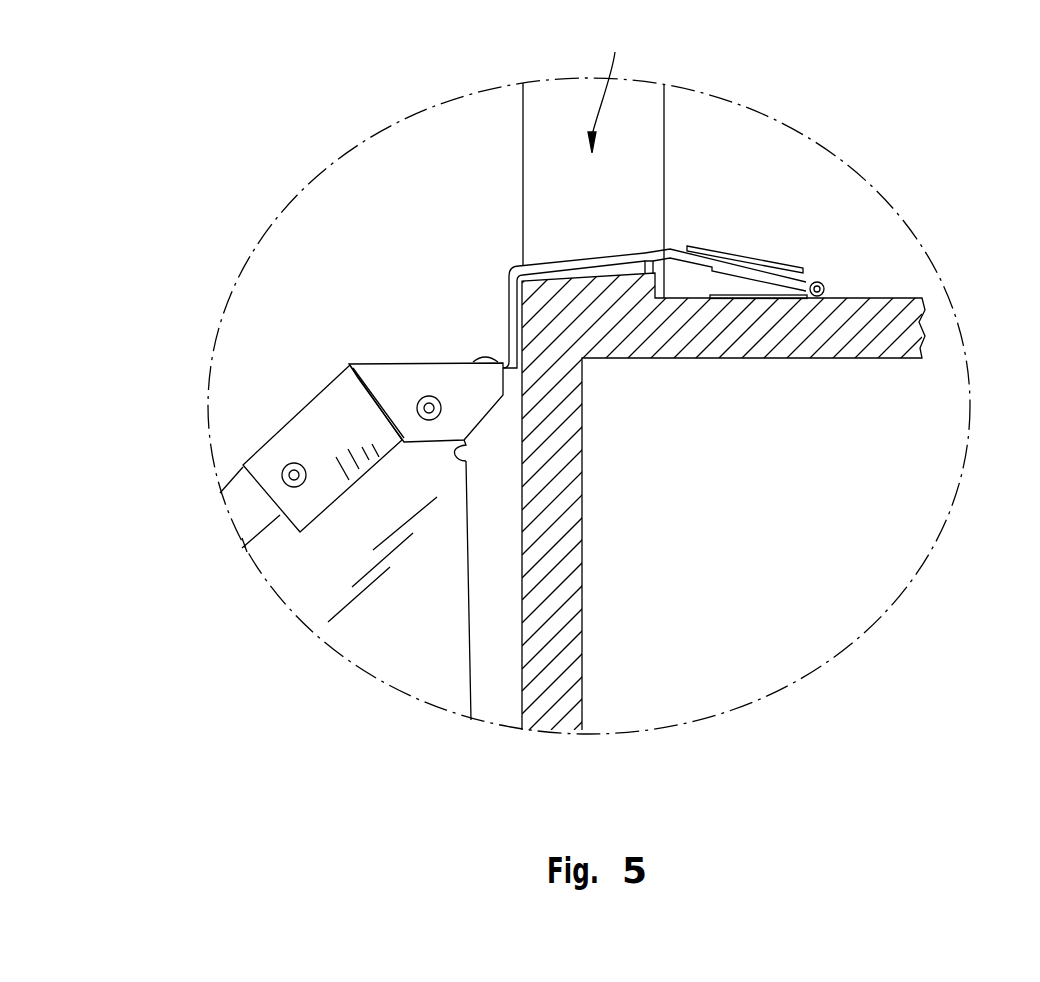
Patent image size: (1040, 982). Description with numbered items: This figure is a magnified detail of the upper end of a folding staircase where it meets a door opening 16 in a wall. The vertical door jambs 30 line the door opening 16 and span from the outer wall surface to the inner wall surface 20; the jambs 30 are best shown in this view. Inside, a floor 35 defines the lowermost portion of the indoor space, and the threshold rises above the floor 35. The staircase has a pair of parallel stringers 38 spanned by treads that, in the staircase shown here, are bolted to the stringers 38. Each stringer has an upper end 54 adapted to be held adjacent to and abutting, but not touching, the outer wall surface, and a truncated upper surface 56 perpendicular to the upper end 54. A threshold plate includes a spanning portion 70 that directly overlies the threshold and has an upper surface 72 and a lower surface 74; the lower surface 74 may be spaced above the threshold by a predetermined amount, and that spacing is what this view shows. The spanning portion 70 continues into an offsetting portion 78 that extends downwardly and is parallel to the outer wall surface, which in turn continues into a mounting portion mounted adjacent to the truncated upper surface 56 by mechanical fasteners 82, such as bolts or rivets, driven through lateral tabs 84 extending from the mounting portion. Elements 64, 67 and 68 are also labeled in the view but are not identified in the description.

The door opening 16 is at (608, 87).
The inner wall surface 20 is at (664, 126).
The vertical door jambs 30 is at (545, 158).
The floor 35 is at (885, 298).
The stringers 38 is at (387, 653).
The upper end 54 is at (472, 687).
The truncated upper surface 56 is at (400, 363).
The base plate 64 is at (773, 300).
The hinge pin 67 is at (824, 285).
The cover plate 68 is at (740, 253).
The spanning portion 70 is at (610, 257).
The upper surface 72 is at (562, 262).
The lower surface 74 is at (621, 255).
The offsetting portion 78 is at (507, 300).
The mechanical fasteners 82 is at (287, 480).
The lateral tabs 84 is at (319, 448).